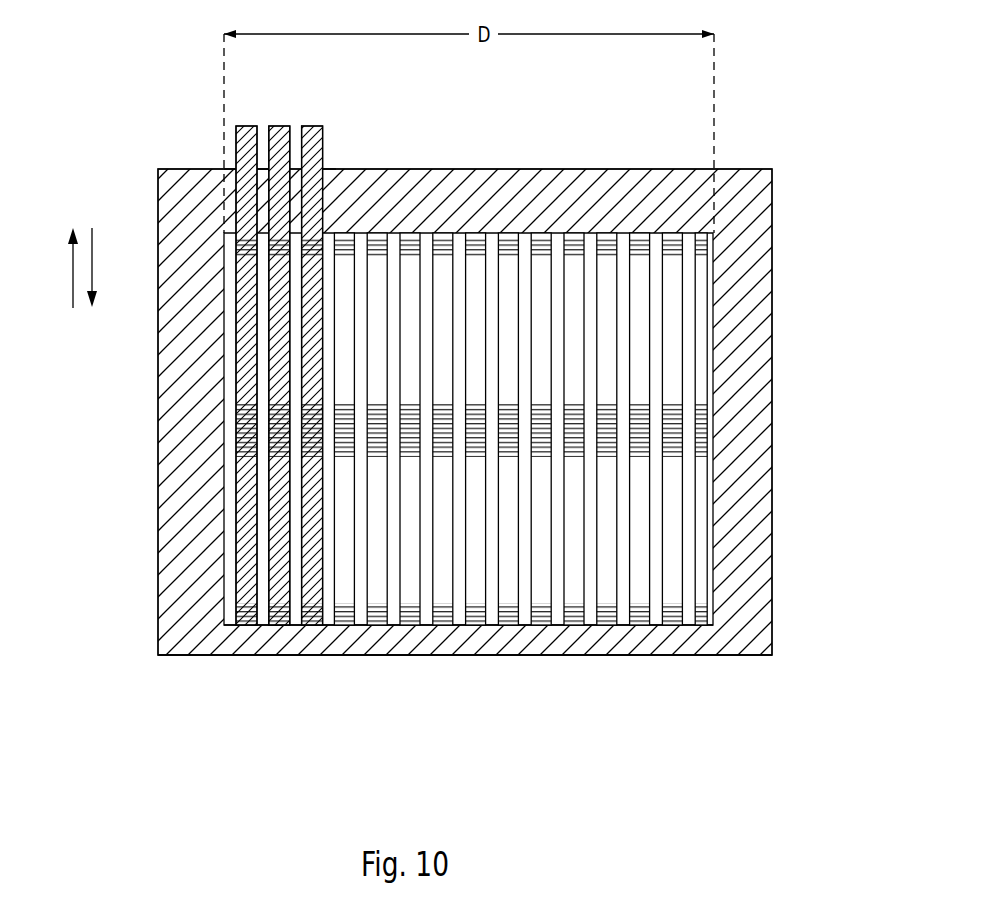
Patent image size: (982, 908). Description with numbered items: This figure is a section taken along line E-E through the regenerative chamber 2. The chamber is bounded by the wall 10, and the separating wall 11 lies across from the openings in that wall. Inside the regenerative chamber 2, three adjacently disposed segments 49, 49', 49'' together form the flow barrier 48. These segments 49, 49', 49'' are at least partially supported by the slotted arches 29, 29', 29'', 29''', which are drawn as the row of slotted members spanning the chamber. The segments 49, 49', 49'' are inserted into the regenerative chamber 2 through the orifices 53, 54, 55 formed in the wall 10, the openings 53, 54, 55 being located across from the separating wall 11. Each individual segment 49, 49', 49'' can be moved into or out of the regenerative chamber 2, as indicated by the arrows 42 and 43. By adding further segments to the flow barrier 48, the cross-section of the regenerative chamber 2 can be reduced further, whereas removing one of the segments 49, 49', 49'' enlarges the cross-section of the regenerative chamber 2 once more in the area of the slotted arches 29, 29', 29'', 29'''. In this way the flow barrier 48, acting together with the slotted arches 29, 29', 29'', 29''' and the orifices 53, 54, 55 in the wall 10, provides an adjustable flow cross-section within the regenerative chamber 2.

The regenerative chamber 2 is at (660, 158).
The wall 10 is at (778, 326).
The separating wall 11 is at (553, 642).
The slotted arch 29 is at (223, 477).
The slotted arch 29' is at (257, 465).
The slotted arch 29'' is at (289, 477).
The slotted arch 29''' is at (328, 465).
The arrow 42 is at (70, 278).
The arrow 43 is at (95, 262).
The flow barrier 48 is at (306, 345).
The segment 49 is at (243, 345).
The segment 49' is at (286, 345).
The segment 49'' is at (322, 345).
The orifice 53 is at (235, 168).
The orifice 54 is at (264, 167).
The orifice 55 is at (323, 168).